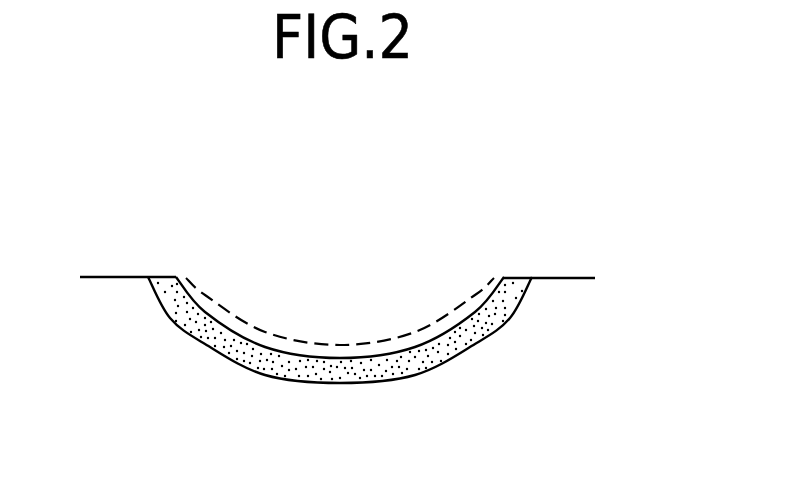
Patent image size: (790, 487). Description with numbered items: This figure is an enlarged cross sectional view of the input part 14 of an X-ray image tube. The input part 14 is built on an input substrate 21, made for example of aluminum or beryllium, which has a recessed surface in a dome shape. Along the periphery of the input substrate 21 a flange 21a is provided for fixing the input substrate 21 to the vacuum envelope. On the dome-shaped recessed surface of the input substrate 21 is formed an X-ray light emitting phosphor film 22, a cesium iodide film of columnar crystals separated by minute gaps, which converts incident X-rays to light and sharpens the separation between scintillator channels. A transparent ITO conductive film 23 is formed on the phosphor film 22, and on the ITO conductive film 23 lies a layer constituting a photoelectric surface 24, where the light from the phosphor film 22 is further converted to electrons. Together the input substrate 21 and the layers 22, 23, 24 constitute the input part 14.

The input part 14 is at (353, 294).
The input substrate 21 is at (353, 314).
The flange 21a is at (572, 277).
The X-ray light emitting phosphor film 22 is at (420, 361).
The ITO conductive film 23 is at (372, 358).
The photoelectric surface 24 is at (222, 312).